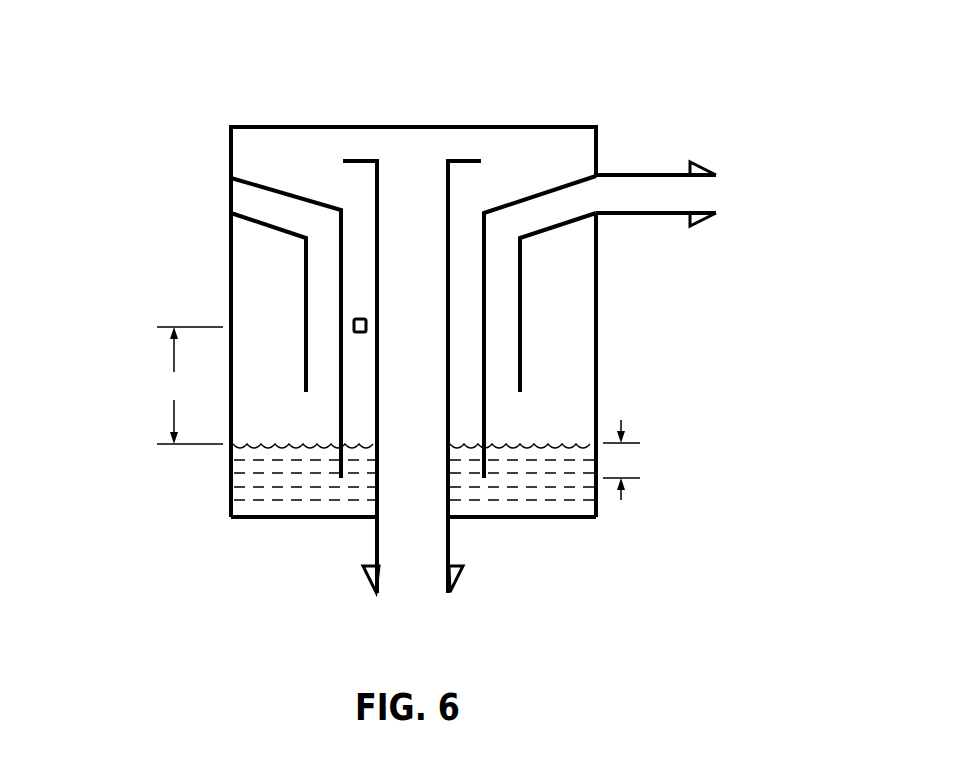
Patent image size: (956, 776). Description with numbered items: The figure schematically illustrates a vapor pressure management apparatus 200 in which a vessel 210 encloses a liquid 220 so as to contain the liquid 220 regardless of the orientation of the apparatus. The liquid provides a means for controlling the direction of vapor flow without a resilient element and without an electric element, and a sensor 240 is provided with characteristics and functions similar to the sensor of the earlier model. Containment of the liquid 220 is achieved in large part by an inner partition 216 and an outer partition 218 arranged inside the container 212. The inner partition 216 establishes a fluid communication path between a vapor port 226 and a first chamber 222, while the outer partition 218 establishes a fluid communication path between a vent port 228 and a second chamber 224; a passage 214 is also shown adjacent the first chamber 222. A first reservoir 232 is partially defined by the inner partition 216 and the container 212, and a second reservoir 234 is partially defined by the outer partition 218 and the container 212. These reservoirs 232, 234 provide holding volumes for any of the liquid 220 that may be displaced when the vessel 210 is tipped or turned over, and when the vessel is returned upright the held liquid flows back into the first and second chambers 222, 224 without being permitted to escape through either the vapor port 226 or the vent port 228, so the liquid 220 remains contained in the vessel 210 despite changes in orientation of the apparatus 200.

The vapor pressure management apparatus 200 is at (432, 341).
The vessel 210 is at (351, 120).
The container 212 is at (598, 390).
The left chamber passage 214 is at (340, 287).
The inner partition 216 is at (450, 188).
The outer partition 218 is at (263, 224).
The liquid 220 is at (245, 487).
The first chamber 222 is at (346, 206).
The second chamber 224 is at (502, 328).
The vapor port 226 is at (378, 584).
The vent port 228 is at (718, 180).
The first reservoir 232 is at (502, 147).
The second reservoir 234 is at (578, 247).
The sensor 240 is at (352, 325).